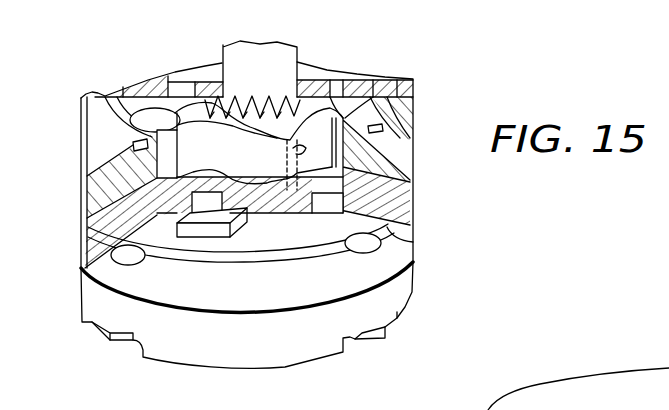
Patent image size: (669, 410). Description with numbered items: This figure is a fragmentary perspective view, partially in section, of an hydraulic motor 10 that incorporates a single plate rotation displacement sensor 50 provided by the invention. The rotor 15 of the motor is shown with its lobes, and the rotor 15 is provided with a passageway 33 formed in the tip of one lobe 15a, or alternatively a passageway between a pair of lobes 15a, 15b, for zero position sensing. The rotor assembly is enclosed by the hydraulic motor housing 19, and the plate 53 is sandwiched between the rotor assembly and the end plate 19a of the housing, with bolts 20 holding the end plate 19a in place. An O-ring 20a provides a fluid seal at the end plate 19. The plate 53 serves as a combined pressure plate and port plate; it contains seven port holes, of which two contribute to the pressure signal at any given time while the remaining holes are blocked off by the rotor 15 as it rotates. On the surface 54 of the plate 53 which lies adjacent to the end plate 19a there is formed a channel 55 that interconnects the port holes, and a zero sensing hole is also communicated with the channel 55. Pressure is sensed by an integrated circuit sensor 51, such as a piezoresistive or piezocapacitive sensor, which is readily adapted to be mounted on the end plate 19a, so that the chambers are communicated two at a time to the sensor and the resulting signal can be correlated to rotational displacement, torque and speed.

The hydraulic motor 10 is at (562, 13).
The rotor 15 is at (237, 40).
The lobe 15a is at (275, 136).
The lobe 15b is at (352, 103).
The hydraulic motor housing 19 is at (76, 179).
The end plate 19a is at (250, 337).
The bolt 20 is at (118, 348).
The O-ring 20a is at (267, 256).
The passageway 33 is at (295, 149).
The single plate rotation displacement sensor 50 is at (423, 160).
The integrated circuit sensor 51 is at (202, 230).
The plate 53 is at (400, 203).
The surface 54 is at (387, 231).
The channel 55 is at (317, 210).